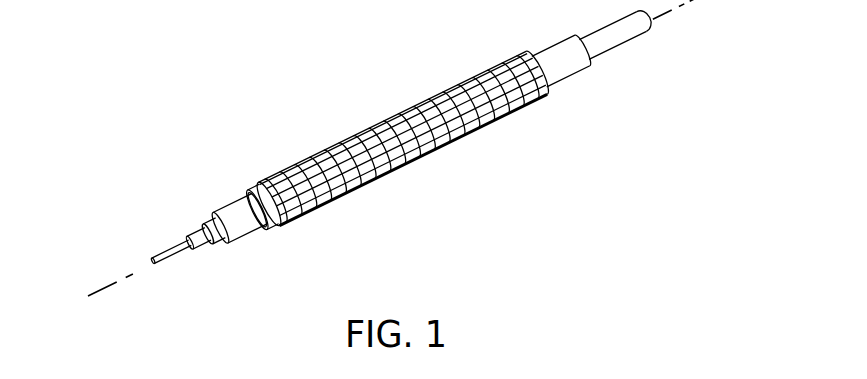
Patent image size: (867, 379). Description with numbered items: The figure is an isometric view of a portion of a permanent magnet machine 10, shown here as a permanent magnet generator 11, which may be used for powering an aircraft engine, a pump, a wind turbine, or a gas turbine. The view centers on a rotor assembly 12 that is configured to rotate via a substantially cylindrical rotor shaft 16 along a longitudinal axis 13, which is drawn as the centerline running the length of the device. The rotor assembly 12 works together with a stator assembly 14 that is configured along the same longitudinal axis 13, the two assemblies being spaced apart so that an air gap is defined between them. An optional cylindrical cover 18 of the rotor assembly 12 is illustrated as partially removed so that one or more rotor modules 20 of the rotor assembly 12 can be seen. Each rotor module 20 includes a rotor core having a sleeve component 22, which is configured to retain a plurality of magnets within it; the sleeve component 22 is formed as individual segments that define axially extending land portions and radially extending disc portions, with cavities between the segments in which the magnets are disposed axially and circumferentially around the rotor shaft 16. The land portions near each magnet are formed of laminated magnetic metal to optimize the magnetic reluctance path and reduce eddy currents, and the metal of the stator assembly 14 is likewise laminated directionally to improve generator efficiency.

The permanent magnet machine 10 is at (134, 60).
The permanent magnet generator 11 is at (151, 134).
The rotor assembly 12 is at (313, 55).
The longitudinal axis 13 is at (121, 279).
The stator assembly 14 is at (468, 113).
The rotor shaft 16 is at (603, 40).
The cylindrical cover 18 is at (540, 93).
The rotor module 20 is at (480, 85).
The sleeve component 22 is at (332, 157).